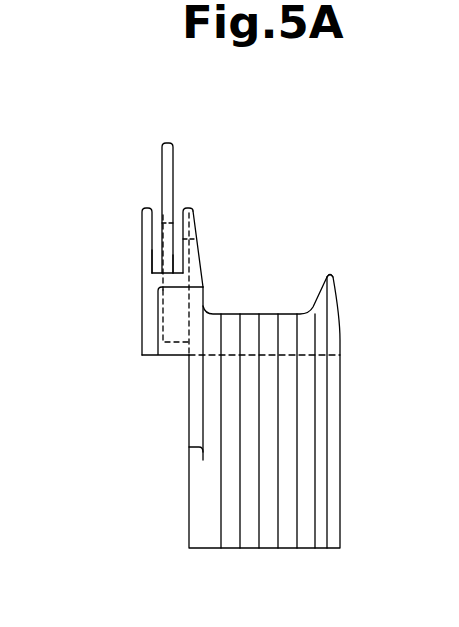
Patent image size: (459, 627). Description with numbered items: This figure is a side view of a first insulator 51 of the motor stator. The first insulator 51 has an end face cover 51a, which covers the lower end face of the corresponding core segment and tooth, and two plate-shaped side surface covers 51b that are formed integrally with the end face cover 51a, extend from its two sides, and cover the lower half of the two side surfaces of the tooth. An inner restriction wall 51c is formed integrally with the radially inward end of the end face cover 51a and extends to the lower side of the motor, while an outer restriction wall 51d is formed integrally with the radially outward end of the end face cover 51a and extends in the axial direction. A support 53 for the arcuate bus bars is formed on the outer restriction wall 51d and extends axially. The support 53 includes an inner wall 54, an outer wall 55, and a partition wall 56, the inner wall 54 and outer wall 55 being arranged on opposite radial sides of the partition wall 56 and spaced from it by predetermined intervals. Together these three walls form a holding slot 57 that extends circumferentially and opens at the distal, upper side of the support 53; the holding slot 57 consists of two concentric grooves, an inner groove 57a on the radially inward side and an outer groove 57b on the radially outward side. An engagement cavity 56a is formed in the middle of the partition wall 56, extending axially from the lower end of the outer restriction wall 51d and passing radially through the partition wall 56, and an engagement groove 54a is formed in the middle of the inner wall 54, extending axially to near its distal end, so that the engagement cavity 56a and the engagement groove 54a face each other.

The first insulator 51 is at (300, 197).
The end face cover 51a is at (250, 323).
The side surface cover 51b is at (300, 474).
The inner restriction wall 51c is at (334, 280).
The outer restriction wall 51d is at (150, 322).
The support 53 is at (174, 152).
The inner wall 54 is at (193, 208).
The engagement groove 54a is at (195, 239).
The outer wall 55 is at (142, 225).
The partition wall 56 is at (168, 143).
The engagement cavity 56a is at (161, 222).
The holding slot 57 is at (68, 247).
The inner groove 57a is at (174, 267).
The outer groove 57b is at (152, 256).